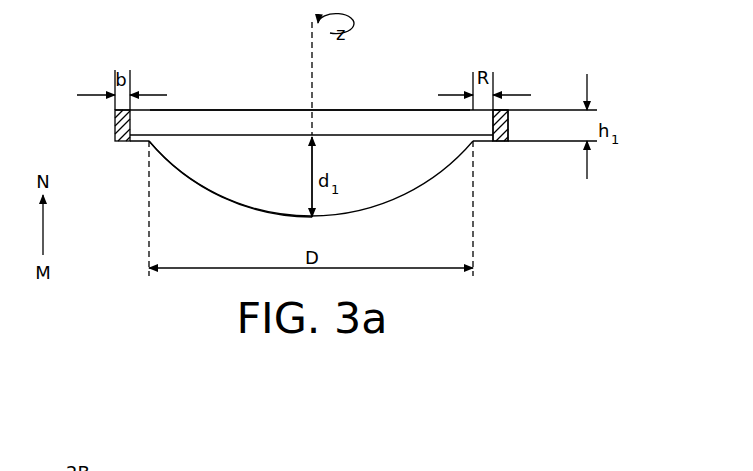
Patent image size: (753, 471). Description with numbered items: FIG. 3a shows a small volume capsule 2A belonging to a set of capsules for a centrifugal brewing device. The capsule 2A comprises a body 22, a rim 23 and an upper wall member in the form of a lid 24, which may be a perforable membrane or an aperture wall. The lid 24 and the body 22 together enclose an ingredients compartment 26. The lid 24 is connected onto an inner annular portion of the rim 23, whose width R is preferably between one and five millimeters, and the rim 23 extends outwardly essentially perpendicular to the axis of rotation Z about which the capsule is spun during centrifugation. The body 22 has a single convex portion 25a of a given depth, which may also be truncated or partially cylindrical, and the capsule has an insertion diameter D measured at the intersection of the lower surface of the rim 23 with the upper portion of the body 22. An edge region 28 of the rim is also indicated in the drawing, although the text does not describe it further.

The capsule 2A is at (316, 128).
The body 22 is at (400, 200).
The rim 23 is at (137, 142).
The lid 24 is at (378, 135).
The convex portion 25a is at (219, 200).
The ingredients compartment 26 is at (248, 146).
The rim 28 is at (508, 128).